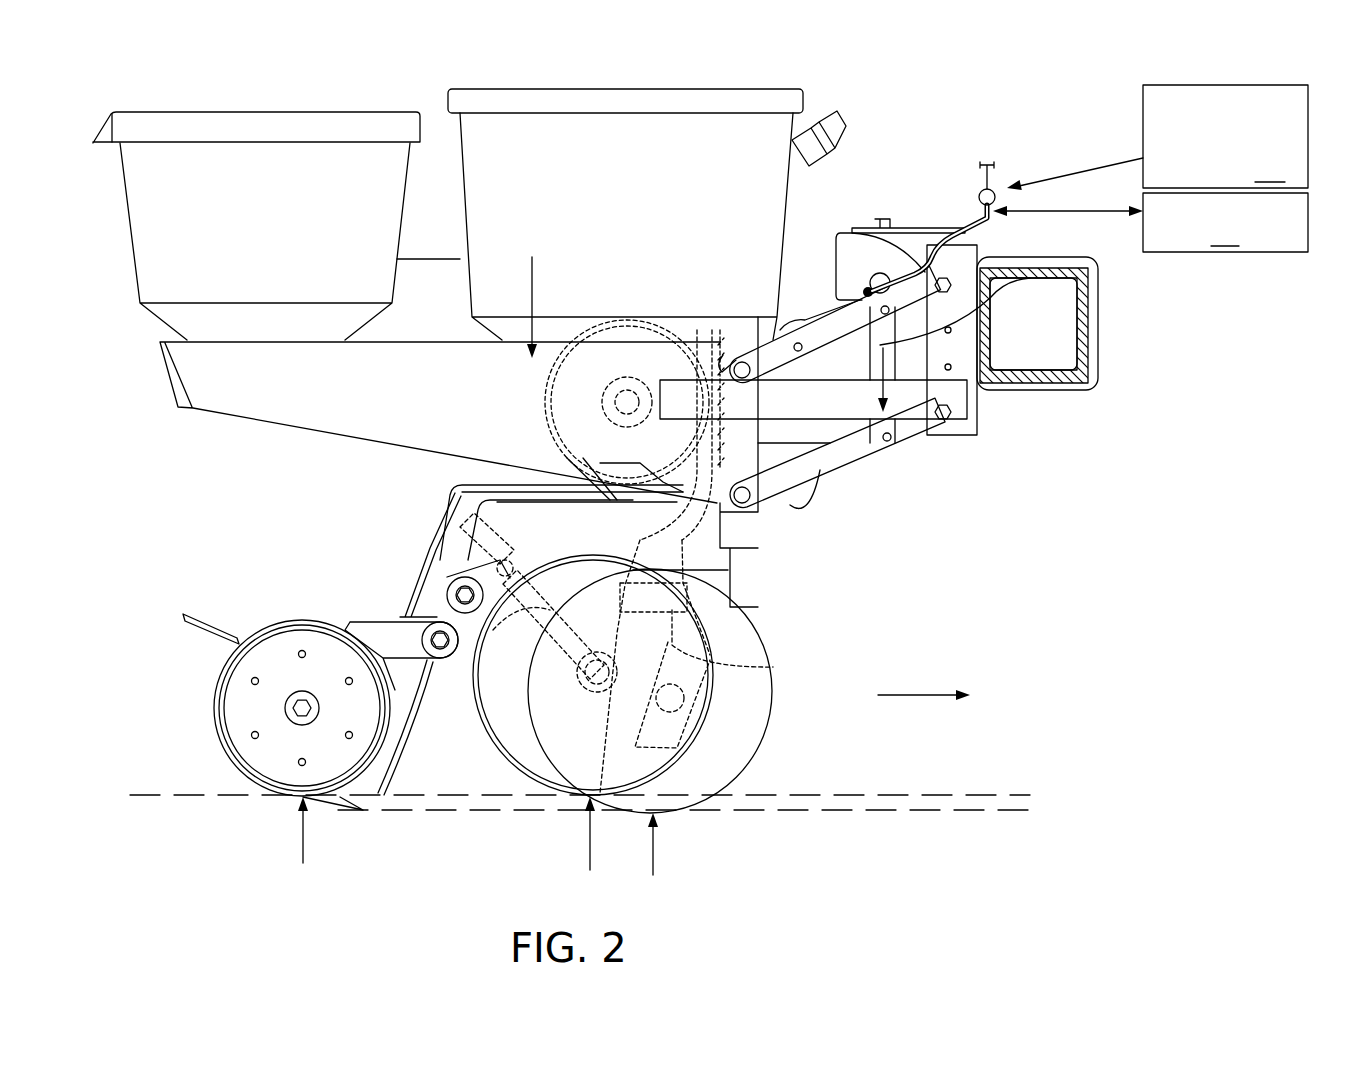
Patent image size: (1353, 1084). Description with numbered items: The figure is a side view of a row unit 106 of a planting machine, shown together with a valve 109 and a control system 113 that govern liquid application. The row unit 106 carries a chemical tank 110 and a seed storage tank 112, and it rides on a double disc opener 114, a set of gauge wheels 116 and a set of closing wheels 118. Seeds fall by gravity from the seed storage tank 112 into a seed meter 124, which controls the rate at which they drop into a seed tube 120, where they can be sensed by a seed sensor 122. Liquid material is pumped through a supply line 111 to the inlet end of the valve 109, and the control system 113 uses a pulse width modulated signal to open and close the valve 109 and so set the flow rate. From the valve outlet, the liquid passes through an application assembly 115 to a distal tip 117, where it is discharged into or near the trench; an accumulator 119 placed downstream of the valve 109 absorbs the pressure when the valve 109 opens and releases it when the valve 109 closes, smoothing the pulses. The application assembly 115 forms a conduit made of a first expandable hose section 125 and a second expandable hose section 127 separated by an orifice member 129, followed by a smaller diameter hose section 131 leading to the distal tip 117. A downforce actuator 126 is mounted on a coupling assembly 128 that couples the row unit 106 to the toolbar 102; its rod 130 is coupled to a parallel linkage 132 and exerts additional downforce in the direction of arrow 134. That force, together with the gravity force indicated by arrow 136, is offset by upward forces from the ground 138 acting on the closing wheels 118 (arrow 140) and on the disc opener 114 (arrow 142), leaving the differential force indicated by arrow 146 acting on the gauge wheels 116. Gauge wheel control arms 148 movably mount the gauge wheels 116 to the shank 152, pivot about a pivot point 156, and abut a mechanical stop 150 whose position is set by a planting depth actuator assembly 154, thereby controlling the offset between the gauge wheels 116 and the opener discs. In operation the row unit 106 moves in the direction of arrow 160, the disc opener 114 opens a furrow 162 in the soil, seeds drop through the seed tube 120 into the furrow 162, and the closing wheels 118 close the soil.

The toolbar 102 is at (1088, 318).
The row unit 106 is at (1093, 92).
The valve 109 is at (997, 198).
The chemical tank 110 is at (243, 231).
The supply line 111 is at (997, 188).
The seed storage tank 112 is at (611, 181).
The control system 113 is at (1157, 137).
The disc opener 114 is at (740, 760).
The application assembly 115 is at (945, 212).
The gauge wheels 116 is at (533, 780).
The distal tip 117 is at (383, 797).
The closing wheels 118 is at (250, 783).
The accumulator 119 is at (1225, 222).
The seed tube 120 is at (773, 667).
The seed sensor 122 is at (722, 628).
The seed meter 124 is at (715, 330).
The first expandable hose section 125 is at (890, 258).
The downforce actuator 126 is at (923, 277).
The second expandable hose section 127 is at (800, 320).
The coupling assembly 128 is at (978, 407).
The orifice member 129 is at (866, 290).
The rod 130 is at (875, 338).
The smaller diameter hose section 131 is at (455, 493).
The parallel linkage 132 is at (858, 427).
The arrow 134 is at (935, 410).
The arrow 136 is at (535, 298).
The ground 138 is at (162, 793).
The arrow 140 is at (303, 847).
The arrow 142 is at (660, 850).
The arrow 146 is at (592, 833).
The gauge wheel control arms 148 is at (493, 630).
The mechanical stop 150 is at (528, 603).
The shank 152 is at (557, 513).
The planting depth actuator assembly 154 is at (433, 550).
The pivot point 156 is at (453, 587).
The arrow 160 is at (925, 697).
The furrow 162 is at (415, 803).